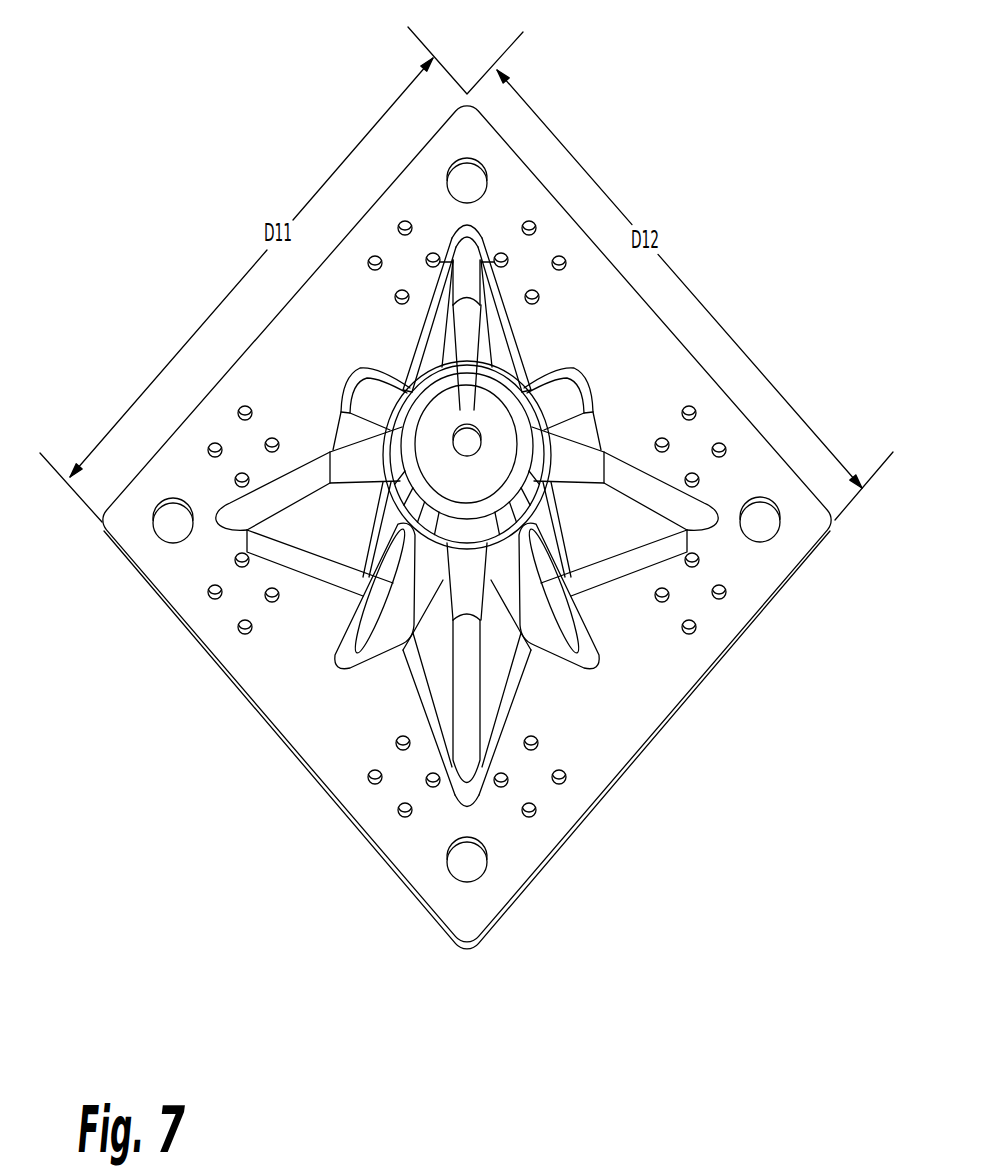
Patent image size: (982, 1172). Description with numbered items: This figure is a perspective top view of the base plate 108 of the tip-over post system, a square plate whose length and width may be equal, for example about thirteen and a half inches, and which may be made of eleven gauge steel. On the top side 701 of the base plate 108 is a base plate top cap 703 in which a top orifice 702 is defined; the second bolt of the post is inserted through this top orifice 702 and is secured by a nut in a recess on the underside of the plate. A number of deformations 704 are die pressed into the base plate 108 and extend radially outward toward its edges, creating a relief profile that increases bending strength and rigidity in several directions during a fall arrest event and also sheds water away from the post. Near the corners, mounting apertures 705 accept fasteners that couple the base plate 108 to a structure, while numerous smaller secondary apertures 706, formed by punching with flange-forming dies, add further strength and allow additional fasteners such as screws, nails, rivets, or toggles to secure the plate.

The base plate 108 is at (292, 802).
The top side 701 is at (627, 710).
The top orifice 702 is at (465, 441).
The base plate top cap 703 is at (475, 407).
The deformations 704 is at (492, 638).
The mounting apertures 705 is at (467, 863).
The secondary apertures 706 is at (403, 813).